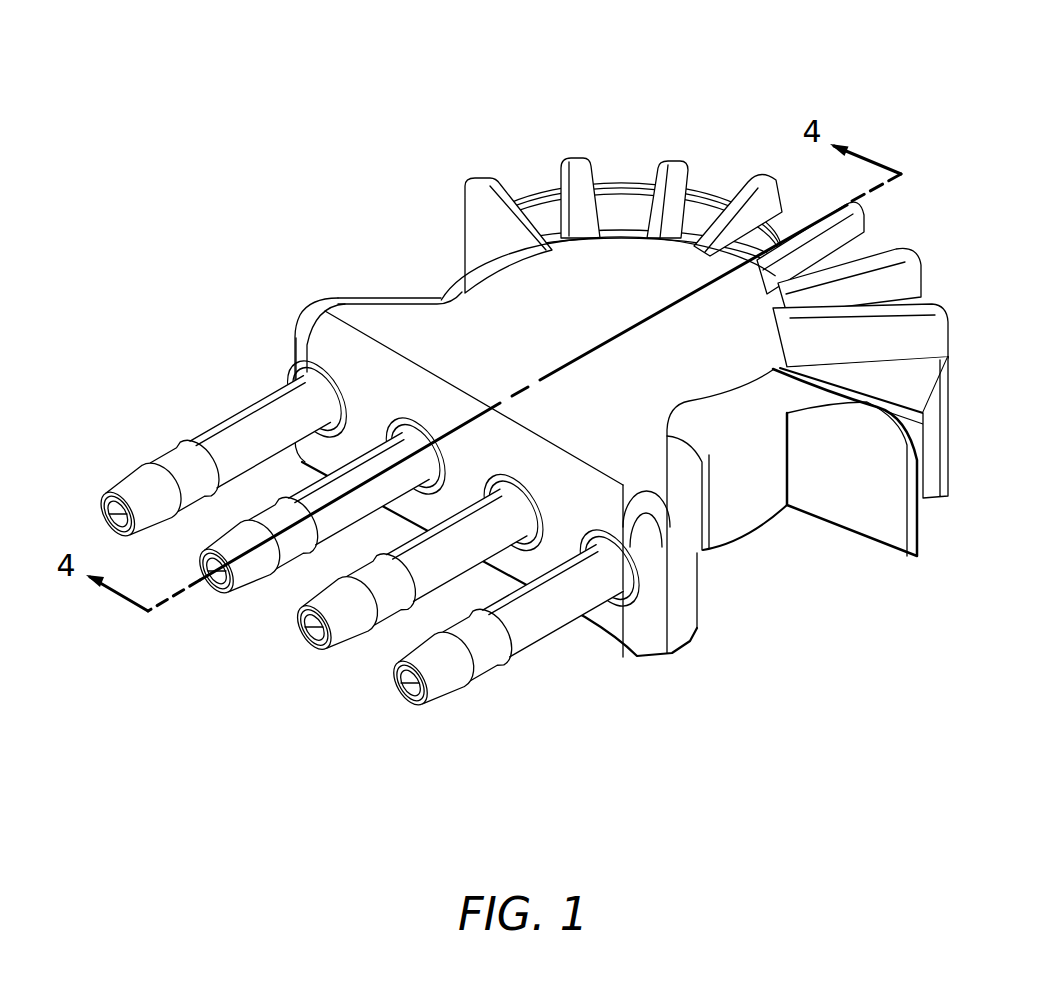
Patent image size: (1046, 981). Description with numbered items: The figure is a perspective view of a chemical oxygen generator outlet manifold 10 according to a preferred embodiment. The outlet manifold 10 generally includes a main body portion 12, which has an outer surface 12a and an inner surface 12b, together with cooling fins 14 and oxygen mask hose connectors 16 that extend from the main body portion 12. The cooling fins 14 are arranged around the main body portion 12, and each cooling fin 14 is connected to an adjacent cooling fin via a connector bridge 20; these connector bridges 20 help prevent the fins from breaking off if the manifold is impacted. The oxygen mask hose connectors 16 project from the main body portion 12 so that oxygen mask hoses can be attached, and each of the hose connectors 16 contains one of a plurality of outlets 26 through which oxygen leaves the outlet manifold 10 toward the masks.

The outlet manifold 10 is at (350, 113).
The main body portion 12 is at (481, 325).
The outer surface 12a is at (361, 318).
The inner surface 12b is at (686, 648).
The cooling fins 14 is at (662, 177).
The oxygen mask hose connectors 16 is at (228, 437).
The connector bridge 20 is at (540, 197).
The outlets 26 is at (108, 508).